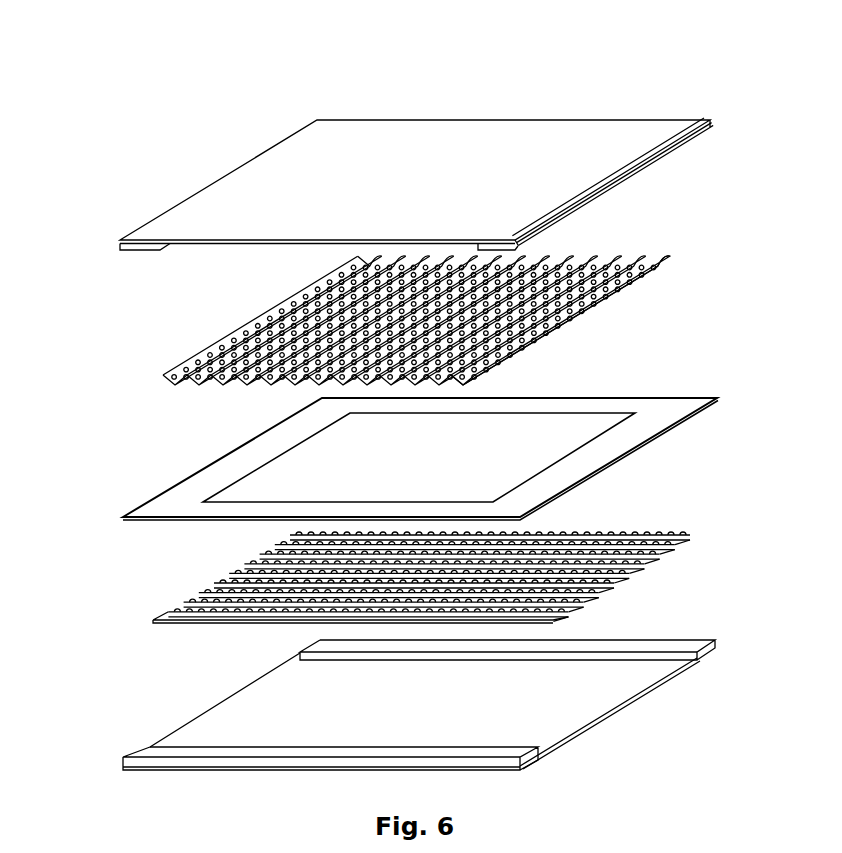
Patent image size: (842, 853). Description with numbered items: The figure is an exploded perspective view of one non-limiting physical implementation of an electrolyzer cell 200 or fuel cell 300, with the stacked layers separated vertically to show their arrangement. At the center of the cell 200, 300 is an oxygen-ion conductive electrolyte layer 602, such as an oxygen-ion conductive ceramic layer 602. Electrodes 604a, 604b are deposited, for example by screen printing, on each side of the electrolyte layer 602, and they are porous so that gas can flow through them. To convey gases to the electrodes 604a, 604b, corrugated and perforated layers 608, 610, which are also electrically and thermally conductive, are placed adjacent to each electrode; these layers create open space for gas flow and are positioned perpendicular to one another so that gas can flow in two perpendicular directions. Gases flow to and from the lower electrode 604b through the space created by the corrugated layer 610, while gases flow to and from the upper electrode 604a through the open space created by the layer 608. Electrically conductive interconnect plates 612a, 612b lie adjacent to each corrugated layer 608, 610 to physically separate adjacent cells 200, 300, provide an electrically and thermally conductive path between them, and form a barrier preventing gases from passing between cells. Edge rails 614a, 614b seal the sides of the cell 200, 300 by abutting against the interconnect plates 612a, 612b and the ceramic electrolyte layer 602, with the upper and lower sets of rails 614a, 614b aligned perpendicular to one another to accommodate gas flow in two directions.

The electrolyzer cell 200 is at (410, 390).
The fuel cell 300 is at (181, 98).
The oxygen-ion conductive electrolyte layer 602 is at (177, 498).
The electrode 604a is at (602, 422).
The lower electrode 604b is at (603, 463).
The corrugated and perforated layer 608 is at (598, 260).
The corrugated layer 610 is at (192, 600).
The interconnect plate 612a is at (613, 130).
The interconnect plate 612b is at (258, 712).
The edge rails 614a is at (675, 150).
The edge rails 614b is at (683, 642).